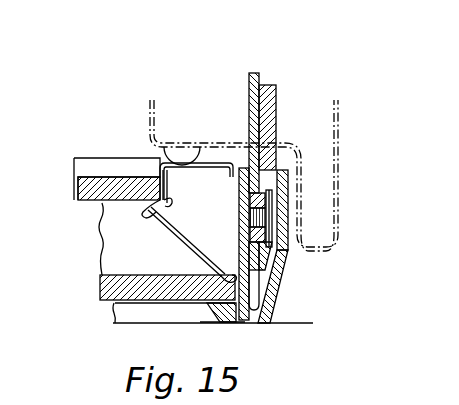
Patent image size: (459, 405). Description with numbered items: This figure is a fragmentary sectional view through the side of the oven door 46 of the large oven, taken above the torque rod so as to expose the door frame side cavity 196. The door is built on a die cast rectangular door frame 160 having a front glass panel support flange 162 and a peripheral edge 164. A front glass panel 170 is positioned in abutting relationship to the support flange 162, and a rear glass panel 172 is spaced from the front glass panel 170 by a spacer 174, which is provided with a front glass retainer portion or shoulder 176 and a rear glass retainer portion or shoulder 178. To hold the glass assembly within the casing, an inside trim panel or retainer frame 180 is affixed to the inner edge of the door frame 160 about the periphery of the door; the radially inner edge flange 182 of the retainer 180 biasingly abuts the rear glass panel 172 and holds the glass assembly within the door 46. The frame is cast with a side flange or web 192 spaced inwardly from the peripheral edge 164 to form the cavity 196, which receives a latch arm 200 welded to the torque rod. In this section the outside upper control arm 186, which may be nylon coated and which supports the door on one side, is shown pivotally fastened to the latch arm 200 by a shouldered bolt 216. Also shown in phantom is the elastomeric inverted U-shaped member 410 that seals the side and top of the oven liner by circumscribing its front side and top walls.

The oven door 46 is at (117, 327).
The door frame 160 is at (305, 323).
The front glass panel support flange 162 is at (218, 325).
The peripheral edge 164 is at (285, 240).
The front glass panel 170 is at (102, 293).
The rear glass panel 172 is at (82, 193).
The spacer 174 is at (175, 247).
The front glass retainer portion 176 is at (210, 300).
The rear glass retainer portion 178 is at (153, 217).
The inside trim panel 180 is at (213, 163).
The radially inner edge flange 182 is at (143, 177).
The outside upper control arm 186 is at (267, 100).
The side flange 192 is at (238, 197).
The cavity 196 is at (253, 293).
The latch arm 200 is at (252, 72).
The shouldered bolt 216 is at (270, 217).
The inverted U-shaped member 410 is at (181, 156).